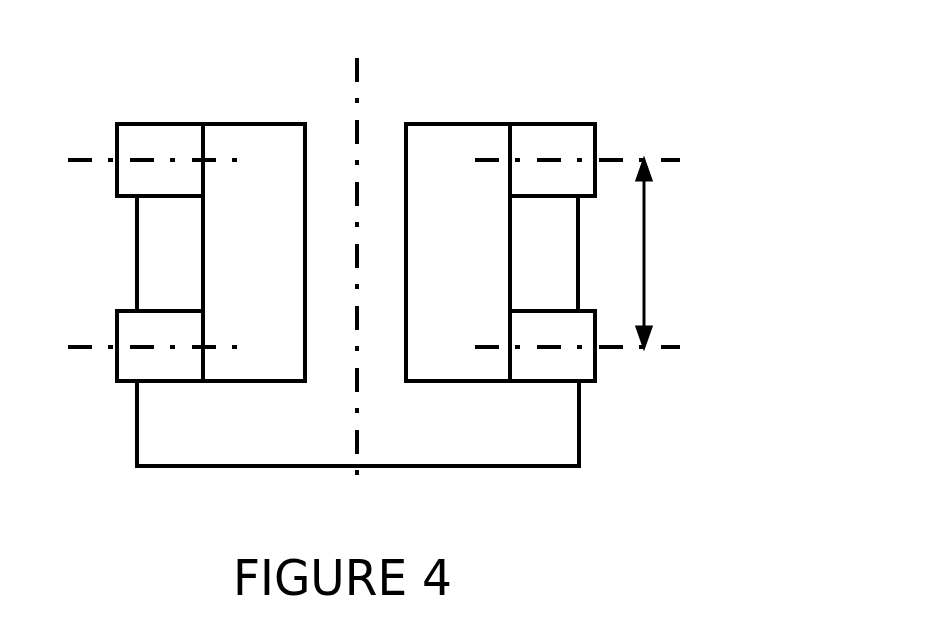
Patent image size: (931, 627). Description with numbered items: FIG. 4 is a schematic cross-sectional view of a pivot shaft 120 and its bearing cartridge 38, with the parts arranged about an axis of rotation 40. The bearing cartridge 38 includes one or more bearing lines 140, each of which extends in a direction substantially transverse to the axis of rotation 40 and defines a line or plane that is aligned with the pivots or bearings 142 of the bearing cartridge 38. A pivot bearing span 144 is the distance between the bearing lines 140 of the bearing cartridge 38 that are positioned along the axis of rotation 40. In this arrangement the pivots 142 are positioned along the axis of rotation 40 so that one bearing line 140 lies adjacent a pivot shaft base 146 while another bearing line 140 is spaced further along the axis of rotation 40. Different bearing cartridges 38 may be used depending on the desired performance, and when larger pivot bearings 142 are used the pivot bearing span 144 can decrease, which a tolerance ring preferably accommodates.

The coil body / web 38 is at (115, 254).
The central axis 40 is at (360, 72).
The core block 120 is at (273, 265).
The center line of end block 140 is at (618, 159).
The end block 142 is at (538, 137).
The spacing dimension 144 is at (647, 218).
The base plate 146 is at (441, 435).